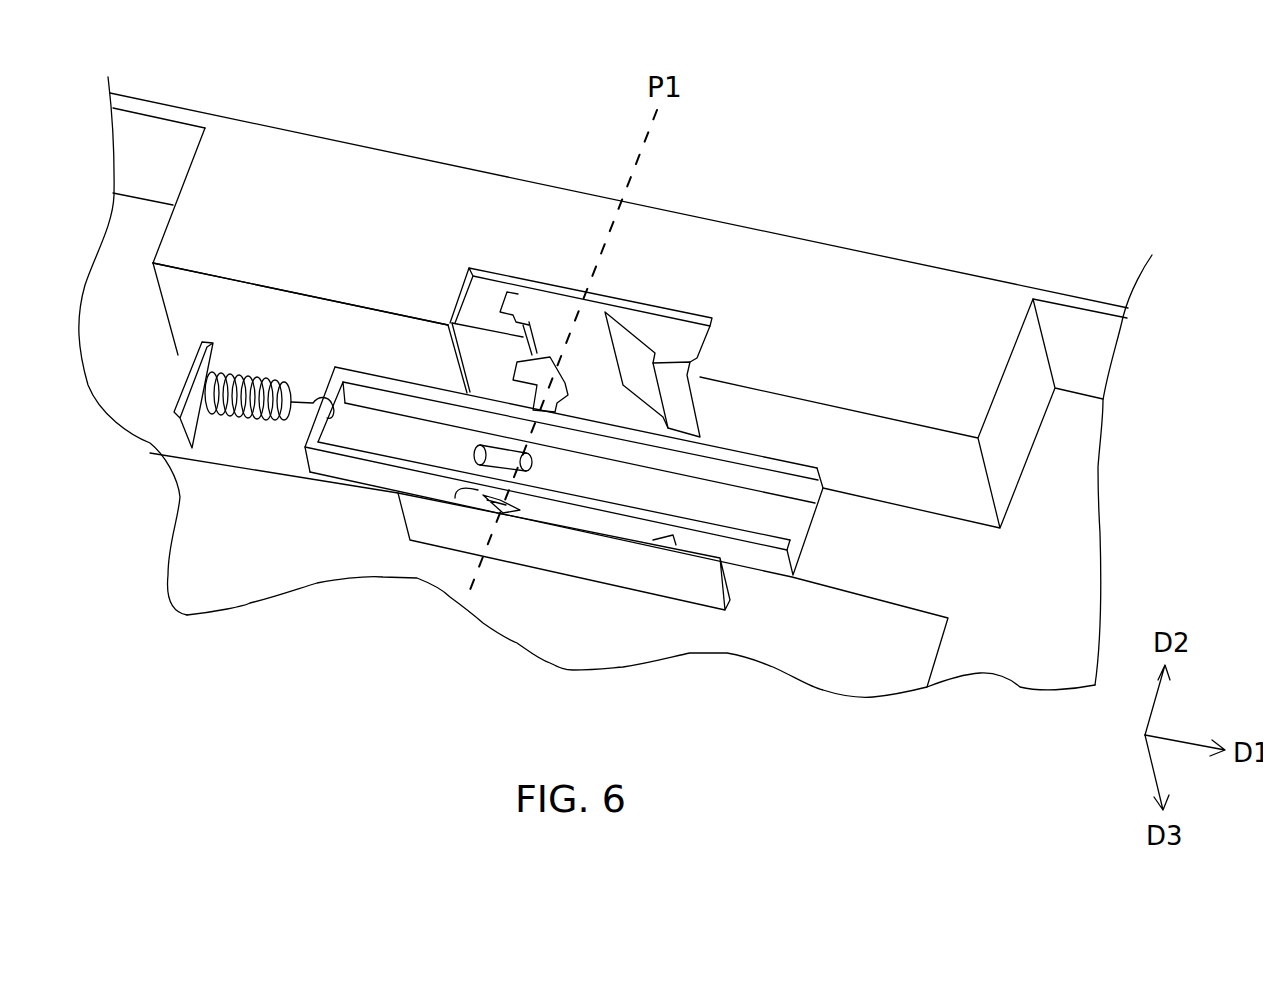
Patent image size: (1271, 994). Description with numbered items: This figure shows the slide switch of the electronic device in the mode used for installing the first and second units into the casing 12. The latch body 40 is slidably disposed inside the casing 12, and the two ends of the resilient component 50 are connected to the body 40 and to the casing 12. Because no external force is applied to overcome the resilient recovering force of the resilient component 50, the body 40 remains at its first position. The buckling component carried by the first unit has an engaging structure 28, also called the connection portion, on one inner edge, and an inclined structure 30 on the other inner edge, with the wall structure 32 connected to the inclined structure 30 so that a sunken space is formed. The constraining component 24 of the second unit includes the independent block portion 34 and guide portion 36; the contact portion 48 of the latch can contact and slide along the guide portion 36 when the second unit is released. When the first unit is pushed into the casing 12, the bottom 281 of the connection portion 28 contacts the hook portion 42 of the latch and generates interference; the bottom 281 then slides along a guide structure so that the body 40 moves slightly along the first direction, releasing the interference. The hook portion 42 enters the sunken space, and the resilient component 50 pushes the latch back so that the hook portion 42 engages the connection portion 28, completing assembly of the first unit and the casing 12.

The casing 12 is at (1060, 472).
The constraining component 24 is at (612, 565).
The engaging structure 28 is at (516, 302).
The bottom of the connection portion 281 is at (520, 327).
The inclined structure 30 is at (633, 328).
The wall structure 32 is at (693, 360).
The block portion 34 is at (498, 510).
The guide portion 36 is at (660, 547).
The body 40 is at (793, 527).
The hook portion 42 is at (557, 395).
The contact portion 48 is at (473, 490).
The resilient component 50 is at (248, 415).